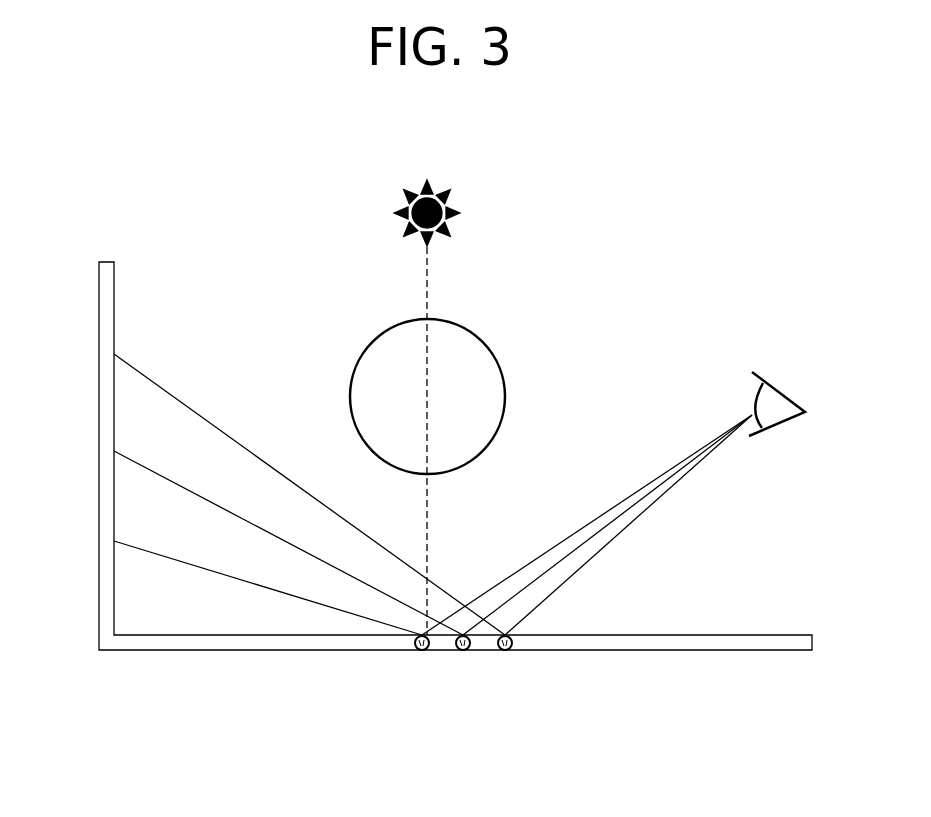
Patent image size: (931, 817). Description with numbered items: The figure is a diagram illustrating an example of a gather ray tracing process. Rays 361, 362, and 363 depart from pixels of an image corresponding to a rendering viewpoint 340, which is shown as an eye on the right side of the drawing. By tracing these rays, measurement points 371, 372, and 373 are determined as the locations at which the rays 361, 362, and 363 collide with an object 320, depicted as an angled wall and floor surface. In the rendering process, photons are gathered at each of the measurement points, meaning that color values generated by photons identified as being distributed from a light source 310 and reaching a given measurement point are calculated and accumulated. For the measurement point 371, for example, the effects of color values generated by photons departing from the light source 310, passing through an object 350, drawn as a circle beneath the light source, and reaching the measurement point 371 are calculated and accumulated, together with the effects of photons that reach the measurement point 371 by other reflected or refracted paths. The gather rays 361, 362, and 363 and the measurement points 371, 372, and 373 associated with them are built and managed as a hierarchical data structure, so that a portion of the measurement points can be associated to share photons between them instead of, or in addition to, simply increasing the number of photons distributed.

The light source 310 is at (428, 185).
The object 320 is at (106, 262).
The rendering viewpoint 340 is at (780, 386).
The object 350 is at (466, 326).
The ray 361 is at (650, 482).
The ray 362 is at (580, 545).
The ray 363 is at (618, 540).
The measurement point 371 is at (418, 657).
The measurement point 372 is at (458, 655).
The measurement point 373 is at (508, 655).